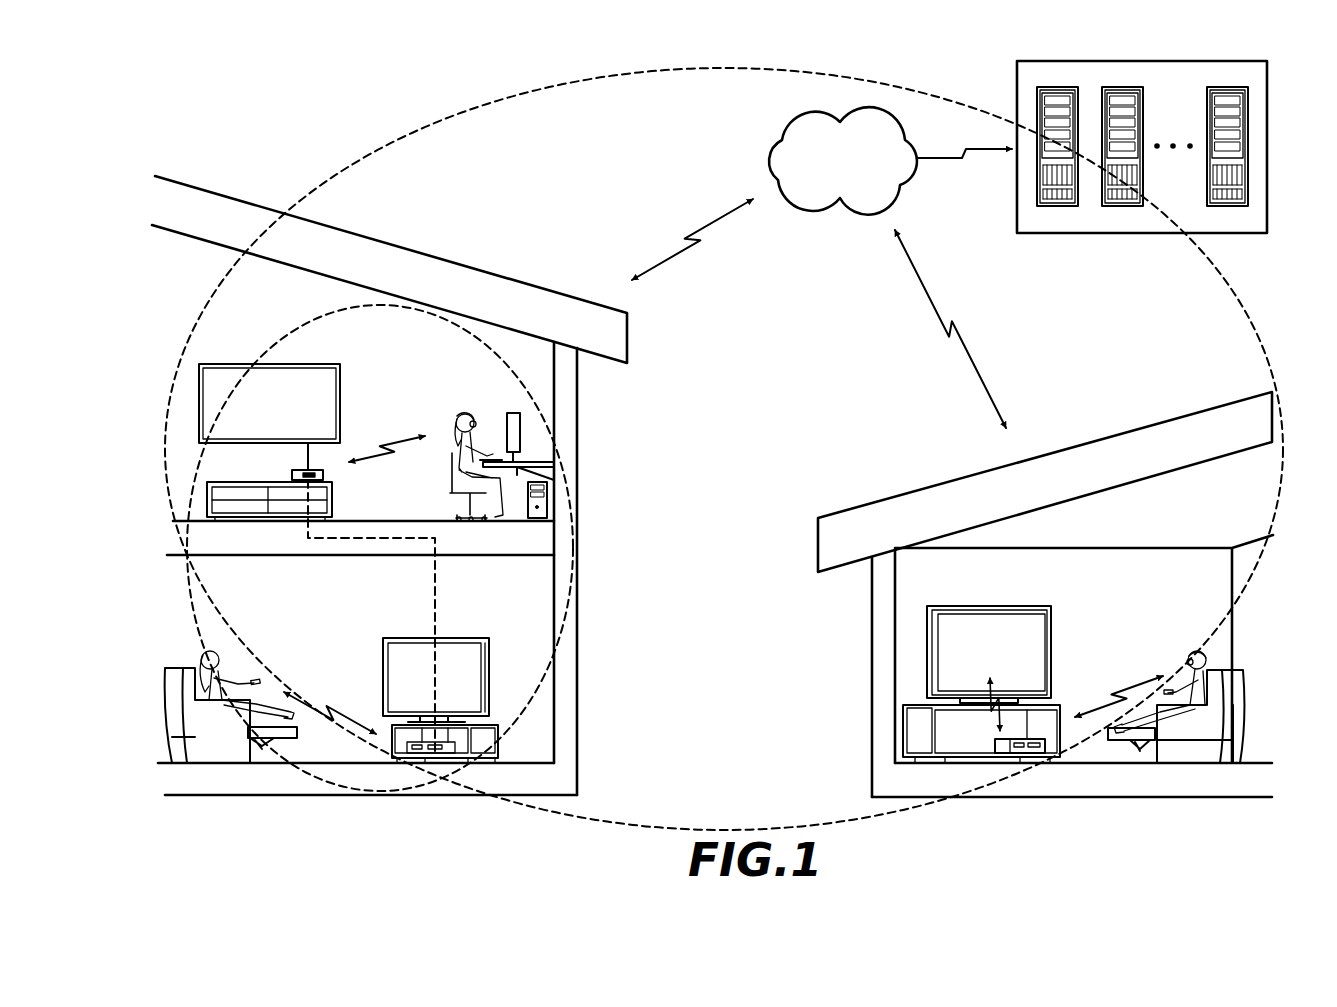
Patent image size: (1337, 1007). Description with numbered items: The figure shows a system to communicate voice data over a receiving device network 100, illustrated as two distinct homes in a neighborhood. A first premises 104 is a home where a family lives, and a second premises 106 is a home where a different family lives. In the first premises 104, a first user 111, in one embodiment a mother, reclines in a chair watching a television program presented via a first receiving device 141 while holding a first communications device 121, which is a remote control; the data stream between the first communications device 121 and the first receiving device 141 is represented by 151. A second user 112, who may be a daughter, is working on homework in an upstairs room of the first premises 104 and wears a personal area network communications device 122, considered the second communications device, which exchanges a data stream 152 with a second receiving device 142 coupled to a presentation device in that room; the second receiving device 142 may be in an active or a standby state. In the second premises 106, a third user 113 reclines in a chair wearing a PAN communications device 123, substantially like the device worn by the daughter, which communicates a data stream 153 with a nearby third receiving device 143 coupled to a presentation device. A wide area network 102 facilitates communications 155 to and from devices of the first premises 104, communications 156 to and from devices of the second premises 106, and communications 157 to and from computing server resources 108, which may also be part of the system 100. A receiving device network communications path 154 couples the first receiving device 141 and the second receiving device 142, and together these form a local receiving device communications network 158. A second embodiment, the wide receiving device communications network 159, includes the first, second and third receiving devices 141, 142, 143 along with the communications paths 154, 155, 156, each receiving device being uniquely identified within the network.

The system to communicate voice data over a receiving device network 100 is at (339, 127).
The wide area network (WAN) 102 is at (817, 112).
The first premises 104 is at (577, 718).
The second premises 106 is at (872, 712).
The computing server resources 108 is at (1017, 87).
The first user 111 is at (220, 695).
The second user 112 is at (450, 444).
The third user 113 is at (1194, 688).
The first communications device 121 is at (266, 676).
The personal area network (PAN) communications device 122 is at (461, 411).
The PAN communications device 123 is at (1208, 666).
The first receiving device 141 is at (456, 748).
The second receiving device 142 is at (323, 476).
The third receiving device 143 is at (1037, 740).
The data stream 151 is at (322, 700).
The data stream 152 is at (378, 458).
The data stream 153 is at (1136, 684).
The receiving device network communications path 154 is at (437, 611).
The communications 155 is at (660, 263).
The communications 156 is at (973, 380).
The communications 157 is at (992, 147).
The local receiving device communications network 158 is at (540, 398).
The wide receiving device communications network 159 is at (500, 108).